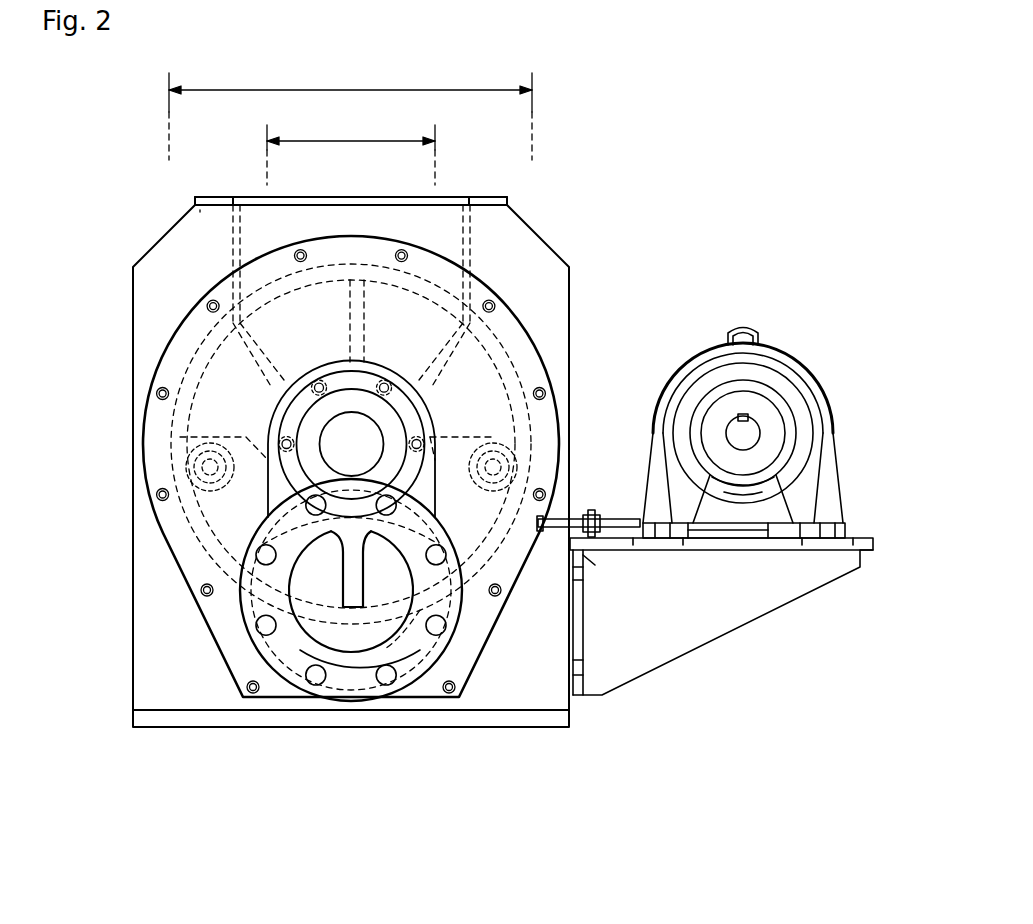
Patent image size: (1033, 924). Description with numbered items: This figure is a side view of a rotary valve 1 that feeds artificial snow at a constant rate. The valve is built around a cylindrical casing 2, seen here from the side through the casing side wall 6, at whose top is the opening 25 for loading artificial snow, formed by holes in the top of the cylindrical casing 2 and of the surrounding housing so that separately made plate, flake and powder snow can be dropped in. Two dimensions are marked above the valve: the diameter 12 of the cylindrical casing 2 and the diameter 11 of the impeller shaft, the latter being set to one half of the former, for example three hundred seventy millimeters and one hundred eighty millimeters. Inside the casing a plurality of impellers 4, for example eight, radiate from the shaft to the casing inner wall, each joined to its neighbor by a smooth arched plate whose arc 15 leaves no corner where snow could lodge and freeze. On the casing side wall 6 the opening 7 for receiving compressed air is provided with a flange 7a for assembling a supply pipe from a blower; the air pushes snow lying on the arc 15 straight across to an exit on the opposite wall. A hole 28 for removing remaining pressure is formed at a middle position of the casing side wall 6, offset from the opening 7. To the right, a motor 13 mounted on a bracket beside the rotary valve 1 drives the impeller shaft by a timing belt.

The rotary valve 1 is at (540, 745).
The cylindrical casing 2 is at (515, 340).
The impeller 4 is at (353, 583).
The casing side wall 6 is at (285, 315).
The opening for receiving compressed air 7 is at (368, 627).
The flange 7a is at (410, 658).
The diameter of impeller shaft 11 is at (355, 141).
The diameter of cylindrical casing 12 is at (288, 90).
The motor 13 is at (846, 370).
The arc 15 is at (270, 412).
The opening for loading of artificial snow 25 is at (395, 222).
The hole for removing remaining pressure 28 is at (215, 477).